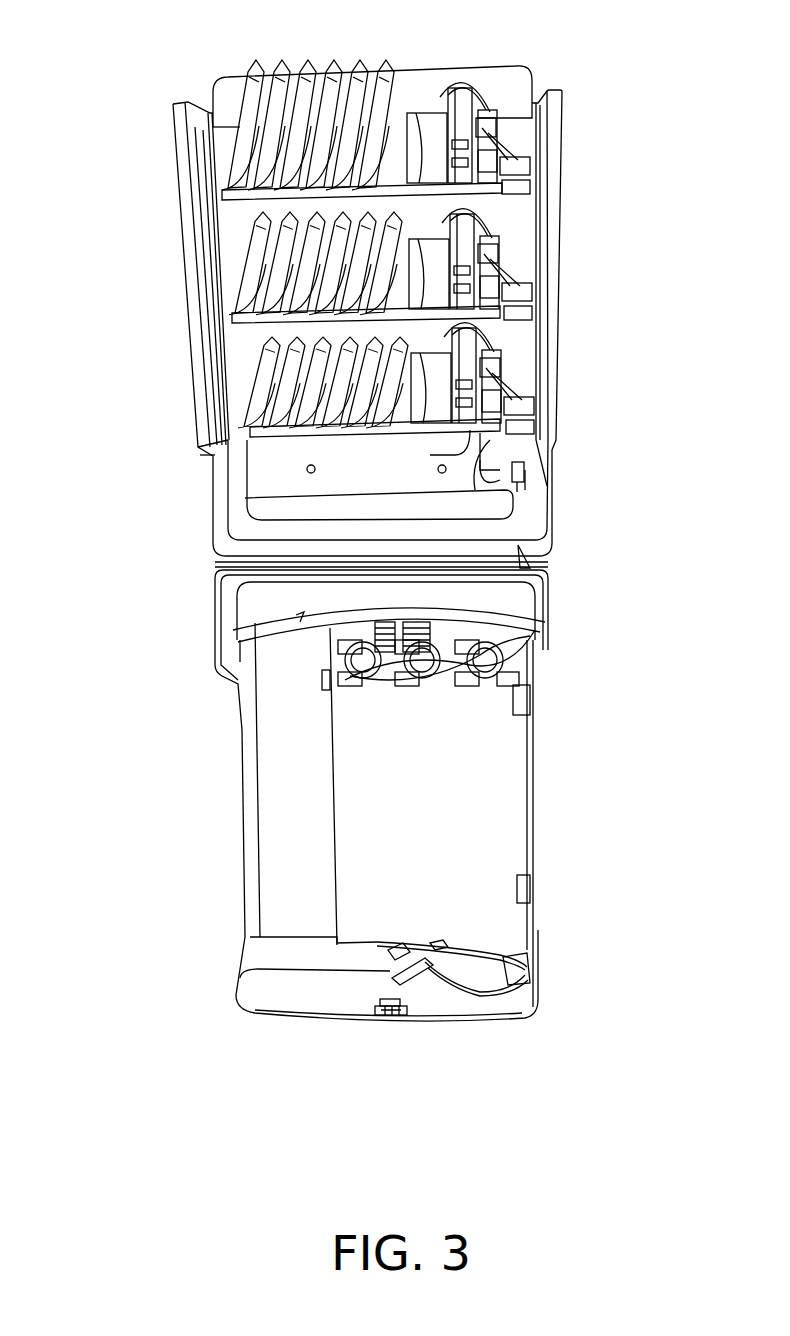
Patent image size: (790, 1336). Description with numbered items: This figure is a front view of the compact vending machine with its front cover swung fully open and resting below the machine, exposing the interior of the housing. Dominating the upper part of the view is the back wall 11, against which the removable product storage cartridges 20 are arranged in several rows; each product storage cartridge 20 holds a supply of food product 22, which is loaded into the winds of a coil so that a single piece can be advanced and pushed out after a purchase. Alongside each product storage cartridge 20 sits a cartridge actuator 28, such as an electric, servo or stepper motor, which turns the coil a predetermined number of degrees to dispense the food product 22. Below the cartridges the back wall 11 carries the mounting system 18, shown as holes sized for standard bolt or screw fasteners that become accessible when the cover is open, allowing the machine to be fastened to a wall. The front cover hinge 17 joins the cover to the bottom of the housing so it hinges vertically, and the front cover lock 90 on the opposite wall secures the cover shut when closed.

The back wall 11 is at (377, 478).
The front cover hinge 17 is at (218, 560).
The mounting system 18 is at (306, 470).
The product storage cartridge 20 is at (233, 383).
The food product 22 is at (395, 50).
The cartridge actuator 28 is at (527, 403).
The front cover lock 90 is at (387, 1015).